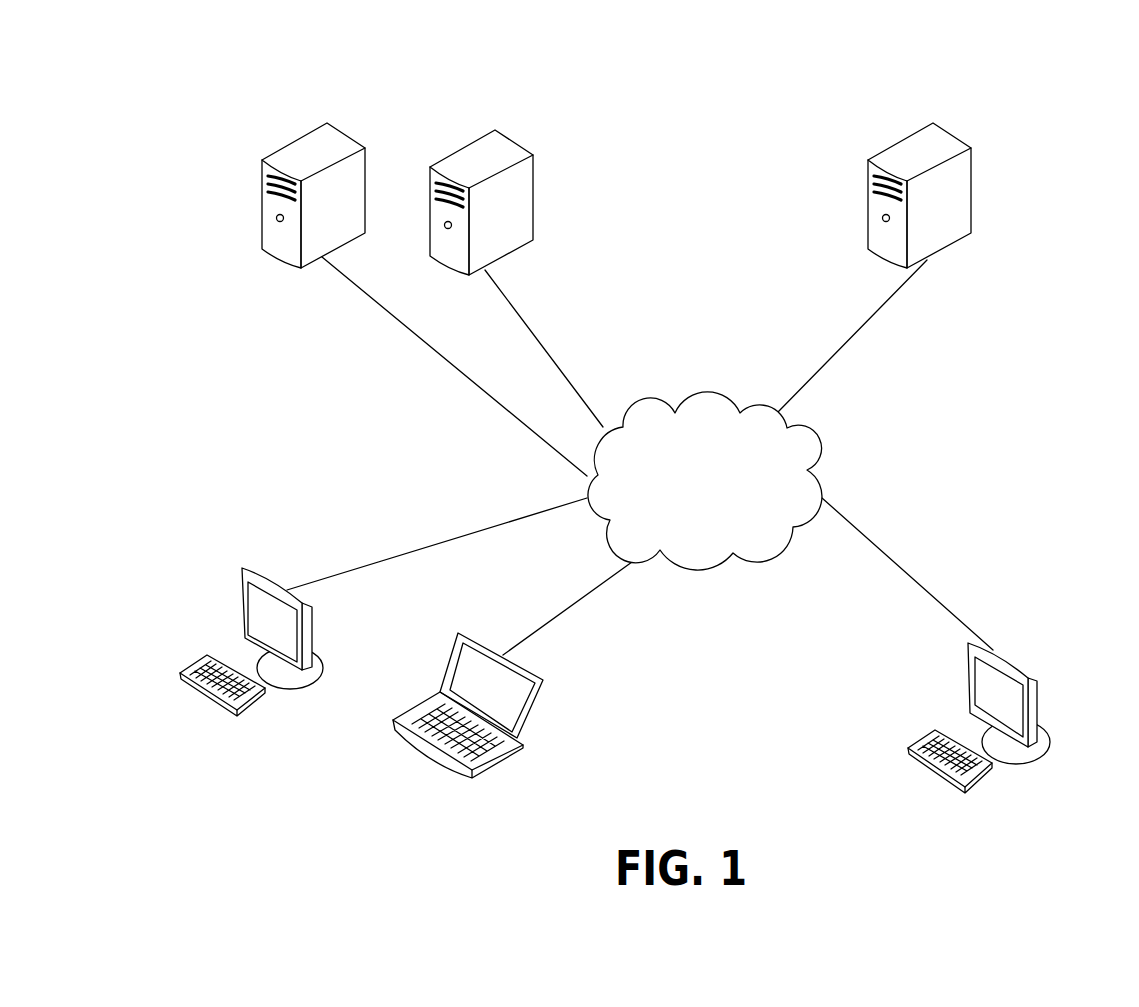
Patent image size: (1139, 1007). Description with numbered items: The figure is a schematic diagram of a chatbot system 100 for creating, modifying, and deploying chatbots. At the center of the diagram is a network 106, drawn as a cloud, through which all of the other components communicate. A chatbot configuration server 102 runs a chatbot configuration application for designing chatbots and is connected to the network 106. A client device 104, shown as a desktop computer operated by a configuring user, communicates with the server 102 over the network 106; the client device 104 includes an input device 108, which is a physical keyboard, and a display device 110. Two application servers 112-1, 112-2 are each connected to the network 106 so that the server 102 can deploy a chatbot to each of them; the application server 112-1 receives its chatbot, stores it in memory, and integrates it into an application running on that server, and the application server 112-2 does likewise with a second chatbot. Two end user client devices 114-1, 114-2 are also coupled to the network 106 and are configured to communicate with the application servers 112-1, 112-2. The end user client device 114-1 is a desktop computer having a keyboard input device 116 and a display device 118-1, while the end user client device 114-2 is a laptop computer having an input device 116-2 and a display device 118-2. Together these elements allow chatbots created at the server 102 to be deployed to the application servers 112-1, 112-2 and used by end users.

The chatbot system 100 is at (1012, 99).
The chatbot configuration server 102 is at (972, 180).
The client device 104 is at (1052, 738).
The network 106 is at (735, 533).
The input device 108 is at (947, 773).
The display device 110 is at (1002, 703).
The application server 112-1 is at (321, 151).
The application server 112-2 is at (490, 161).
The end user client device 114-1 is at (317, 683).
The end user client device 114-2 is at (538, 708).
The input device 116 is at (220, 697).
The input device 116-2 is at (455, 747).
The display device 118-1 is at (265, 603).
The display device 118-2 is at (482, 678).